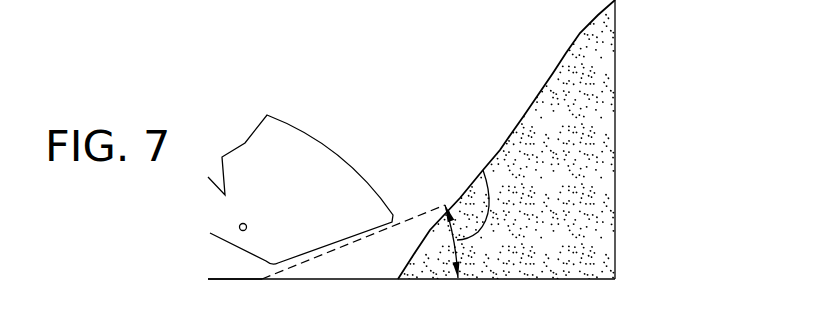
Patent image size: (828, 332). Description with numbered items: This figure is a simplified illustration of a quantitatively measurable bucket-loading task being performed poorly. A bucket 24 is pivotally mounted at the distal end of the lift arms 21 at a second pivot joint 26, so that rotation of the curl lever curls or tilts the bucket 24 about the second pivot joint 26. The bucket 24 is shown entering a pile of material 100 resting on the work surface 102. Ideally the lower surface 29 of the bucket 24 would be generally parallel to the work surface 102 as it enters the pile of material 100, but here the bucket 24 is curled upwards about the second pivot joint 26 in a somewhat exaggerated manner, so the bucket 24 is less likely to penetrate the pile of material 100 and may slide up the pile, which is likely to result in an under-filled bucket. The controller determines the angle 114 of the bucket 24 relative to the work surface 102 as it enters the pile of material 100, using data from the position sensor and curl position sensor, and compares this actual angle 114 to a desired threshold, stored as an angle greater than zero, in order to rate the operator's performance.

The lift arms 21 is at (411, 305).
The bucket 24 is at (307, 157).
The second pivot joint 26 is at (247, 227).
The lower surface 29 is at (353, 242).
The pile of material 100 is at (567, 128).
The work surface 102 is at (235, 279).
The angle 114 is at (483, 170).